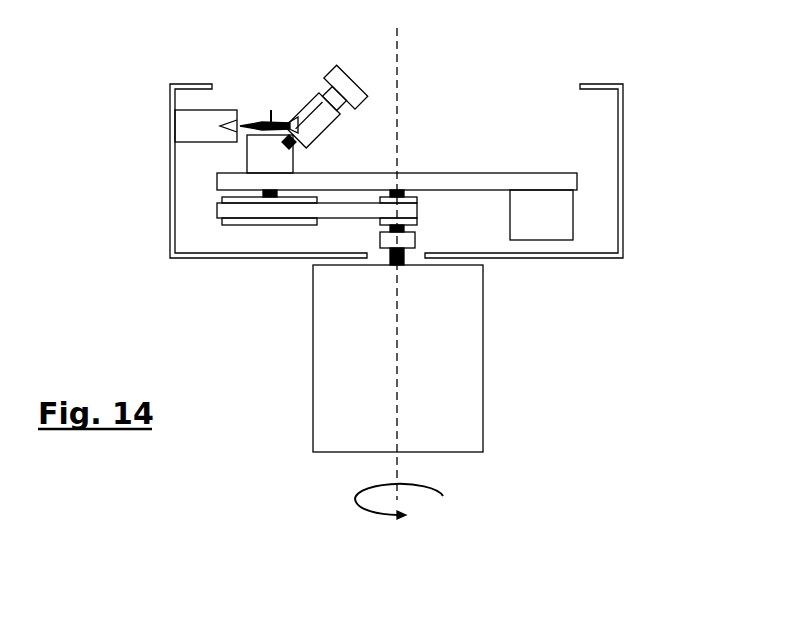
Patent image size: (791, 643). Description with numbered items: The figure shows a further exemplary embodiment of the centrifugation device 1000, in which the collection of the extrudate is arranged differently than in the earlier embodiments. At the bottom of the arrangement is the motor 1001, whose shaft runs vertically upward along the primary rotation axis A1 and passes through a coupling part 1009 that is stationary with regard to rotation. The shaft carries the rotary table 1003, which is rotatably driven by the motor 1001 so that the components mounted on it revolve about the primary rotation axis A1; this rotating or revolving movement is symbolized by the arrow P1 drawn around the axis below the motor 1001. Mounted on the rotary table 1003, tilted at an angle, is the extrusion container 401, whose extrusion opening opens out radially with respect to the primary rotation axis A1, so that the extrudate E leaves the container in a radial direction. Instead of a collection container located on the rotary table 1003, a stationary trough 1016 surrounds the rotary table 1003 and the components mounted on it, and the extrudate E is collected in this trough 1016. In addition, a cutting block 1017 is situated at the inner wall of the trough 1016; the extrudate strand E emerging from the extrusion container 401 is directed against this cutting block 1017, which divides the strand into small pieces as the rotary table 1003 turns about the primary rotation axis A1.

The centrifugation device 1000 is at (503, 74).
The extrusion container 401 is at (299, 94).
The extrudate E is at (262, 118).
The cutting block 1017 is at (190, 124).
The stationary trough 1016 is at (182, 257).
The rotary table 1003 is at (468, 180).
The coupling part 1009 is at (418, 237).
The motor 1001 is at (322, 342).
The primary rotation axis A1 is at (400, 352).
The arrow indicating rotating movement P1 is at (378, 516).